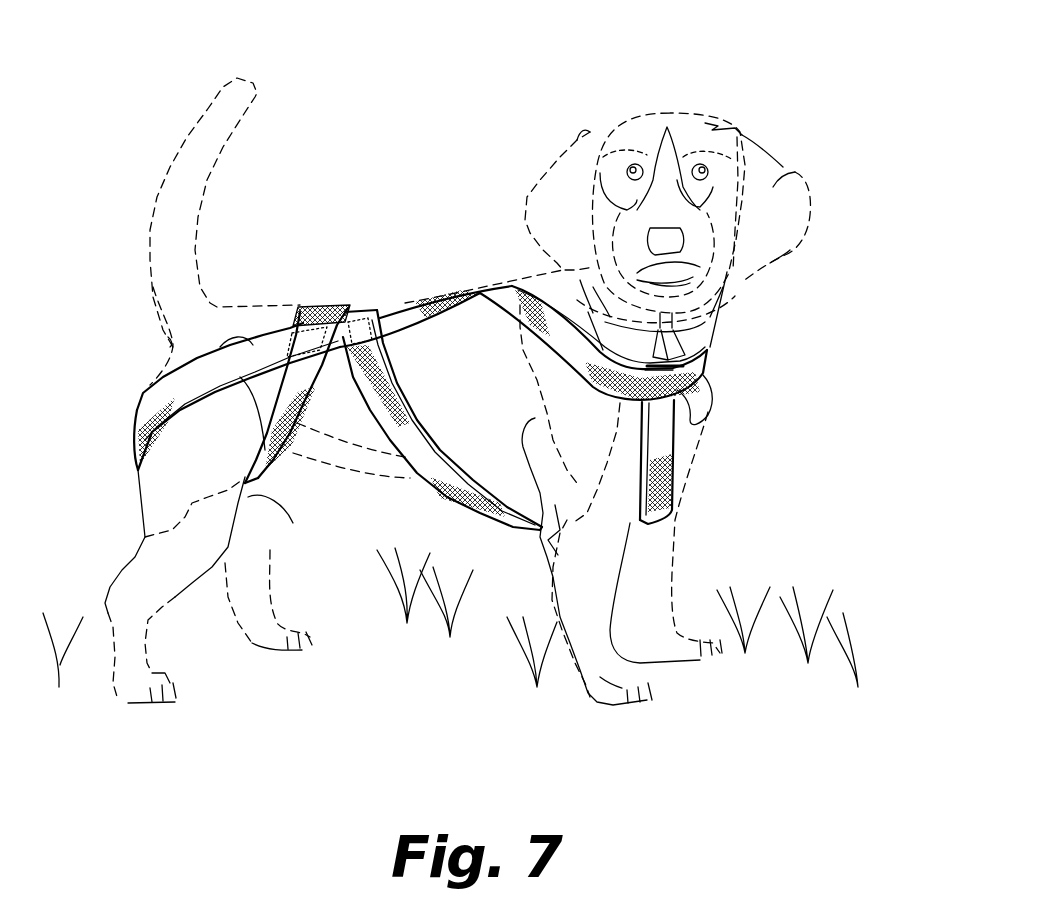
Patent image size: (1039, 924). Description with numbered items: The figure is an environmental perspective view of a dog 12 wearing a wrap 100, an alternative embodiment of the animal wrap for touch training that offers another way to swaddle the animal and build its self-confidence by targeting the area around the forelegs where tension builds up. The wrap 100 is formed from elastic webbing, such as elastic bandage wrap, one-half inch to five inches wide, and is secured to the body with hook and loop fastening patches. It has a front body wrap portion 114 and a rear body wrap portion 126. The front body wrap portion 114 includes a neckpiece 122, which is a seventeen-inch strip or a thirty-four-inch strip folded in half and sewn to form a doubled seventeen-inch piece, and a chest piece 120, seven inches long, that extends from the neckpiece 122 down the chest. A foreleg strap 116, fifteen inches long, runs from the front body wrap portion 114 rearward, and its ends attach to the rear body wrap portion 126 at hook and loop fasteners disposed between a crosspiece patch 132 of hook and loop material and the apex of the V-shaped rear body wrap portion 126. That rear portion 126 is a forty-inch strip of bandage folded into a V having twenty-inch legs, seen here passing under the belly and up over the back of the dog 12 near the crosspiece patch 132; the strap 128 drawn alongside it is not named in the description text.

The dog 12 is at (795, 172).
The wrap 100 is at (350, 125).
The front body wrap portion 114 is at (510, 262).
The foreleg strap 116 is at (415, 457).
The chest piece 120 is at (663, 440).
The neckpiece 122 is at (715, 368).
The rear body wrap portion 126 is at (355, 284).
The belly strap 128 is at (218, 380).
The crosspiece patch 132 is at (298, 305).